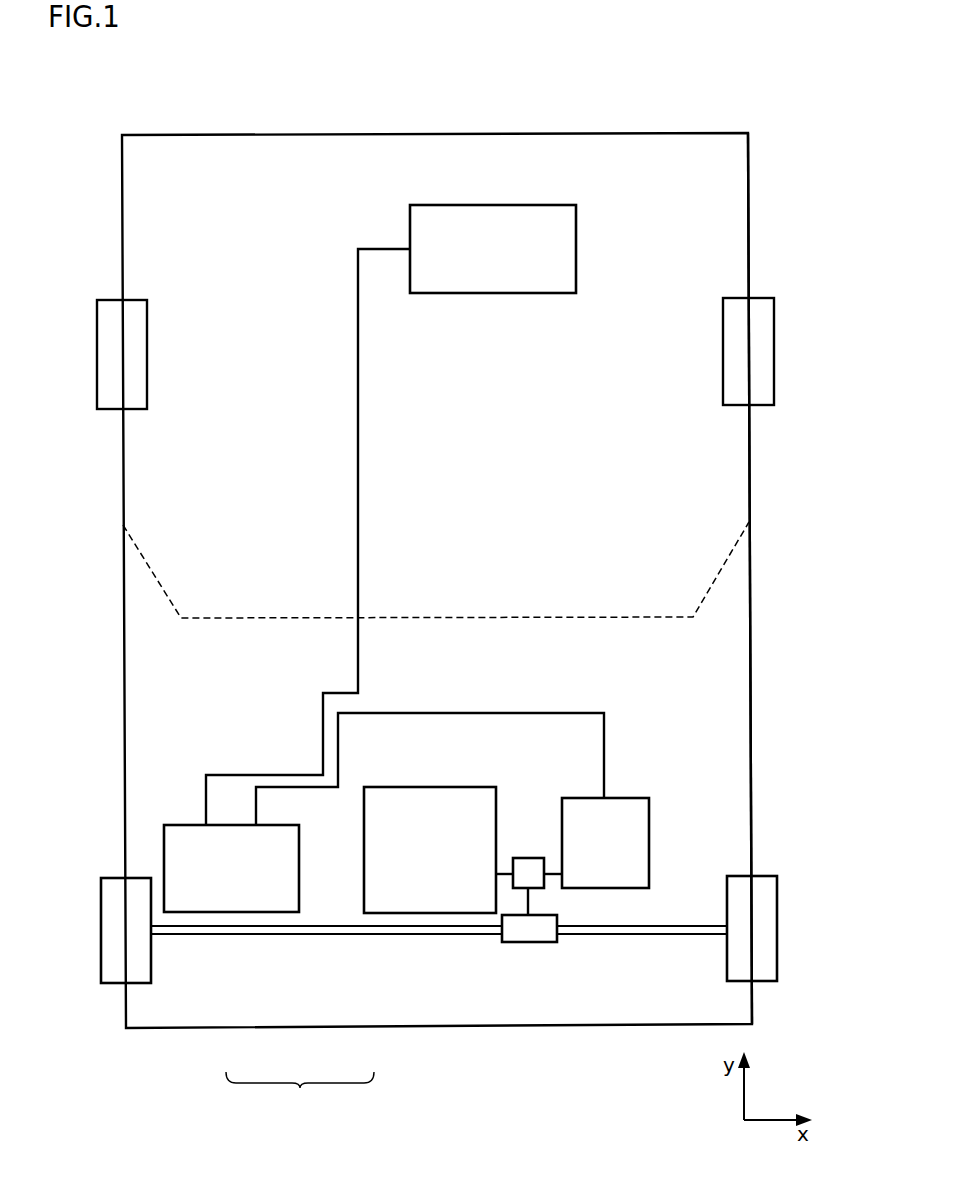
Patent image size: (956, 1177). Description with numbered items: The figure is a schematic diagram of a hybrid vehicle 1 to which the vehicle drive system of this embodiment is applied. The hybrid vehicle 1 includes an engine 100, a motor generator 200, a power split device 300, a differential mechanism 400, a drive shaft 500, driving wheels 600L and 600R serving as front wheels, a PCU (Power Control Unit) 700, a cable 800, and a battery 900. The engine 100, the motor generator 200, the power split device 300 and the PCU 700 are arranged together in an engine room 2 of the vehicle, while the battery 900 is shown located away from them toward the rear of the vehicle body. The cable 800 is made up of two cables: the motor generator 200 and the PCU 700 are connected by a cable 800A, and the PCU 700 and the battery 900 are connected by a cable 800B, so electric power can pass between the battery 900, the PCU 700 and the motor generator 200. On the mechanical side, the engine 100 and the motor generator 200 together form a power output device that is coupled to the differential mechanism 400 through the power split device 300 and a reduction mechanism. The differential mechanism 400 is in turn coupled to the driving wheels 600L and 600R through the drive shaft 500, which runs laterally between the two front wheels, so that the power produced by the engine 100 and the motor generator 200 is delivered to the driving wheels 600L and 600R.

The hybrid vehicle 1 is at (151, 113).
The engine room 2 is at (771, 832).
The engine 100 is at (428, 888).
The motor generator 200 is at (605, 888).
The power split device 300 is at (512, 886).
The differential mechanism 400 is at (532, 942).
The drive shaft 500 is at (179, 935).
The driving wheel 600R is at (101, 930).
The driving wheel 600L is at (777, 929).
The PCU (Power Control Unit) 700 is at (200, 912).
The cable 800 is at (300, 1092).
The cable 800A is at (326, 787).
The cable 800B is at (270, 775).
The battery 900 is at (576, 249).